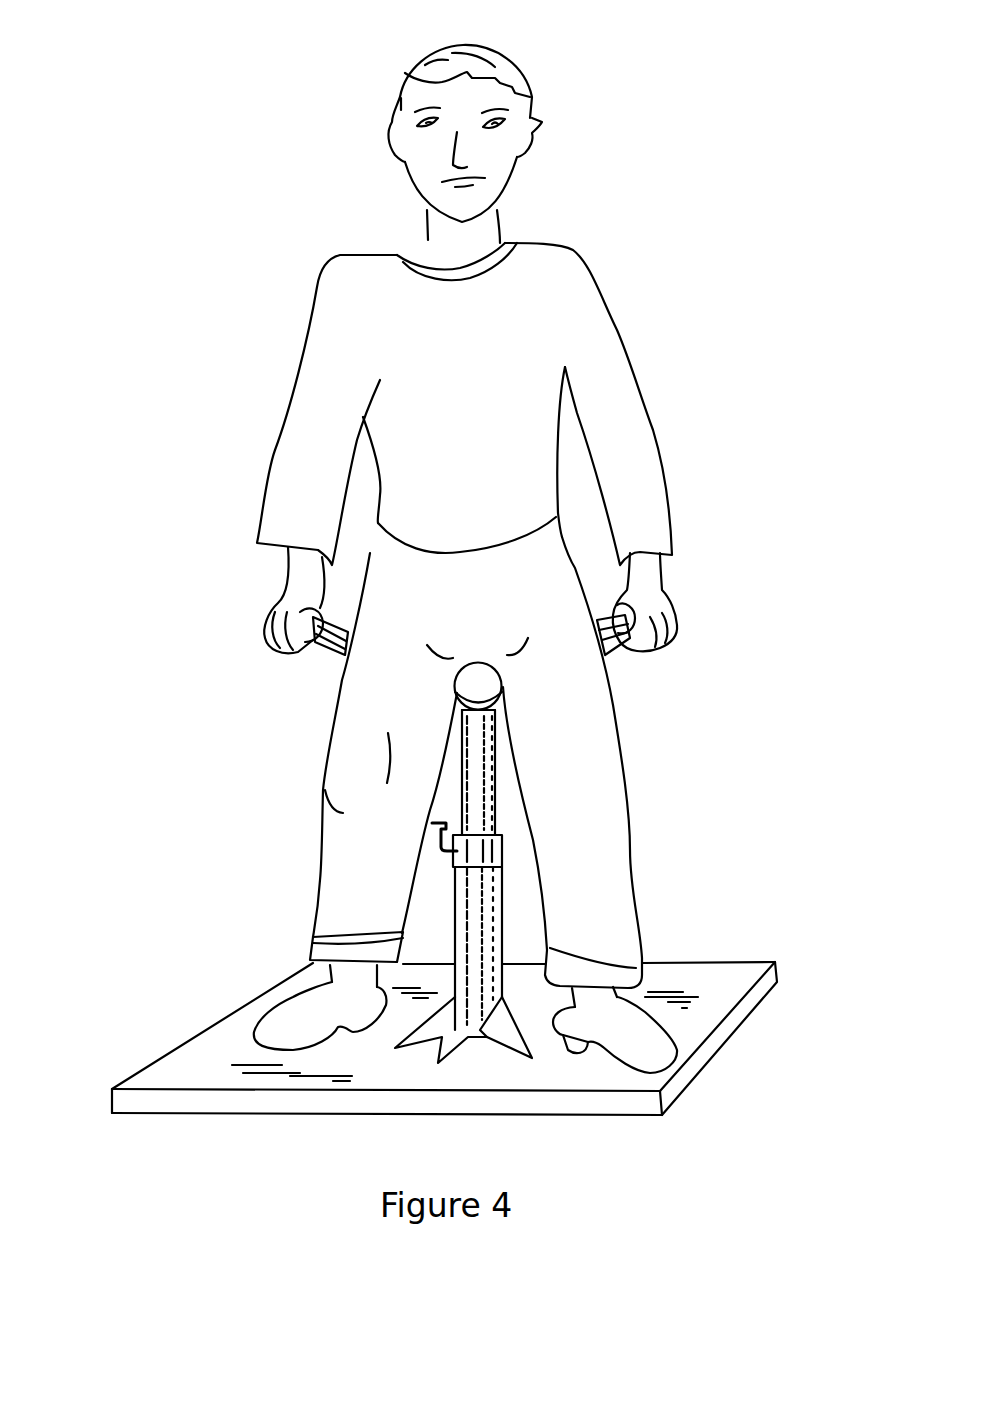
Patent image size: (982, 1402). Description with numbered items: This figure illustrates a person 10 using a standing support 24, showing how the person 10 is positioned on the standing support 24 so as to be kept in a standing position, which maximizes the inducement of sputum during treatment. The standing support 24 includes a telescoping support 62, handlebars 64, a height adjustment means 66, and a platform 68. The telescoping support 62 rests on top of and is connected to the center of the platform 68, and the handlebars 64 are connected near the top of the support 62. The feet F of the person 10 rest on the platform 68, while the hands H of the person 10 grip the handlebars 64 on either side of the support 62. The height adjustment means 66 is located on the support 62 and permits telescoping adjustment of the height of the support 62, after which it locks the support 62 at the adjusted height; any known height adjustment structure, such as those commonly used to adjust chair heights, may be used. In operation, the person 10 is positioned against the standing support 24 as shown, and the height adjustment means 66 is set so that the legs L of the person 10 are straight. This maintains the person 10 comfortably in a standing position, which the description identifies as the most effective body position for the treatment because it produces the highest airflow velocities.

The person 10 is at (447, 622).
The standing support 24 is at (430, 1052).
The telescoping support 62 is at (500, 771).
The handlebars 64 is at (323, 650).
The height adjustment means 66 is at (457, 852).
The platform 68 is at (140, 1100).
The hands H is at (278, 605).
The legs L is at (347, 833).
The feet F is at (298, 1020).